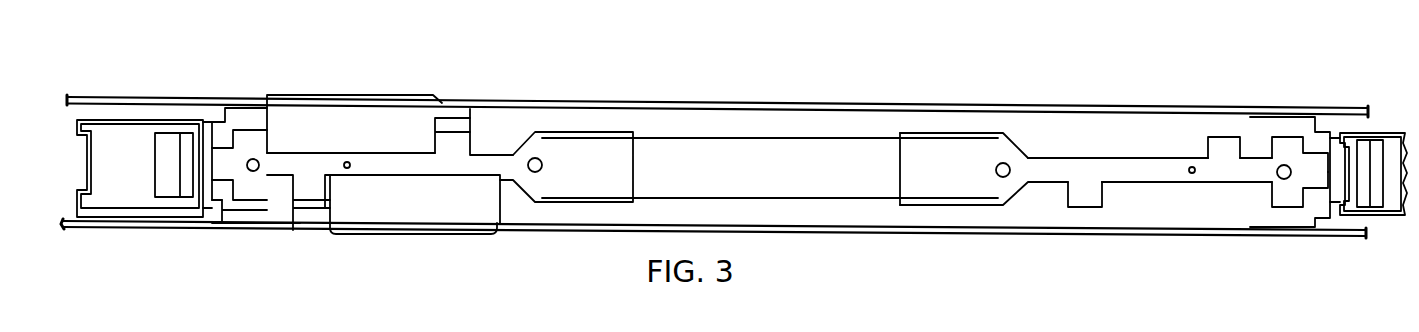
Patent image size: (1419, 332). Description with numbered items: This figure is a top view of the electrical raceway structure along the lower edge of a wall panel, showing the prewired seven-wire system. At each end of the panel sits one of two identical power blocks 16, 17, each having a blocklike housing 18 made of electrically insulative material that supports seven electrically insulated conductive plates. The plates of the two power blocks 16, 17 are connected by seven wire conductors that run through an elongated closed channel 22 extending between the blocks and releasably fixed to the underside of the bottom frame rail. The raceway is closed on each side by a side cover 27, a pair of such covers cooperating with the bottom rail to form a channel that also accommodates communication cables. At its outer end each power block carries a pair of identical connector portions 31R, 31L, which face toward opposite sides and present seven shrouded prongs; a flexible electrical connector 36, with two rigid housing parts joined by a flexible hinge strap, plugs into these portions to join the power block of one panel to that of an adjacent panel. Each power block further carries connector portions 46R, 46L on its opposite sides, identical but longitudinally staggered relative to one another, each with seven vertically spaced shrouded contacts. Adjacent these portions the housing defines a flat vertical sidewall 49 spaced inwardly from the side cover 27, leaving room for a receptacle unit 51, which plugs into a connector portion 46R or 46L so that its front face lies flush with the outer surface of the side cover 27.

The power block 16 is at (493, 157).
The power block 17 is at (1064, 157).
The blocklike housing 18 is at (393, 163).
The elongated closed channel 22 is at (830, 152).
The side cover 27 is at (1010, 232).
The connector portion 31L is at (1284, 137).
The connector portion 31R is at (1281, 207).
The flexible electrical connector 36 is at (226, 228).
The connector portion 46L is at (1222, 137).
The connector portion 46R is at (1083, 207).
The vertical sidewall 49 is at (1120, 160).
The receptacle unit 51 is at (307, 118).